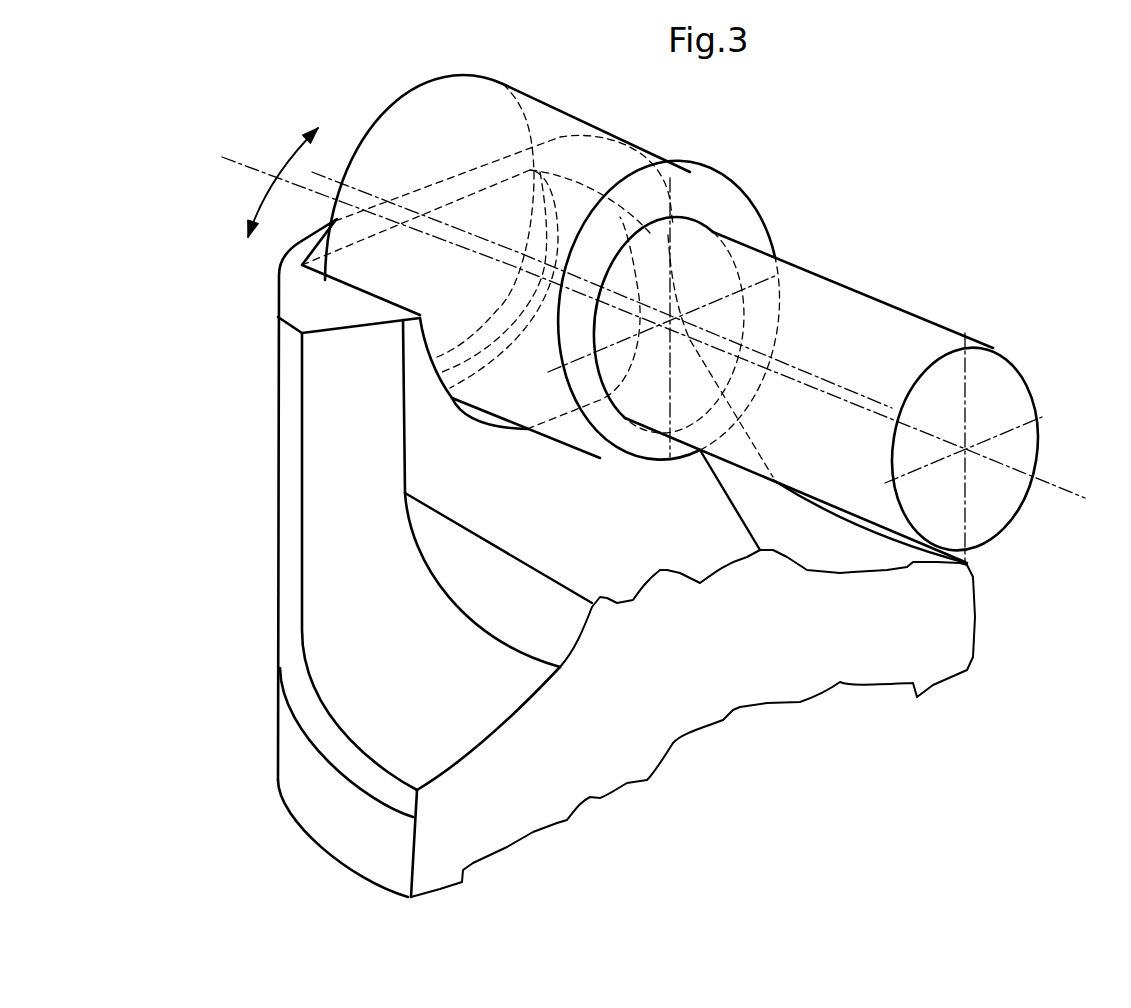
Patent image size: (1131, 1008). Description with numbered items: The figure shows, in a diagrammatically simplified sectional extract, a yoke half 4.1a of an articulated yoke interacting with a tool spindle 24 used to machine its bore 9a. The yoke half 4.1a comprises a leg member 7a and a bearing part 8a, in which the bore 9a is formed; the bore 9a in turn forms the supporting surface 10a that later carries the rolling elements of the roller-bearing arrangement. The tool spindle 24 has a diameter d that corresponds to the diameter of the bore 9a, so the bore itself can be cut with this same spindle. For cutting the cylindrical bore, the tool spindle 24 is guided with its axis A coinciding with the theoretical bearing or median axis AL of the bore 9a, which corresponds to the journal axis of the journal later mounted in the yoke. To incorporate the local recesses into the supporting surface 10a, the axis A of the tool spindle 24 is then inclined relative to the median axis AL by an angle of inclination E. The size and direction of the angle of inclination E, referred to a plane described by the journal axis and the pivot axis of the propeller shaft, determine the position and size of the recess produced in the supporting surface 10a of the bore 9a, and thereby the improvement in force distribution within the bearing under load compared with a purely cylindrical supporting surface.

The yoke half 4.1a is at (333, 581).
The leg member 7a is at (360, 836).
The bearing part 8a is at (300, 291).
The bore 9a is at (497, 427).
The supporting surface 10a is at (516, 430).
The tool spindle 24 is at (883, 318).
The axis of the tool spindle A is at (1067, 487).
The median axis of the bore AL is at (470, 250).
The diameter of the tool spindle d is at (1003, 430).
The angle of inclination E is at (265, 182).